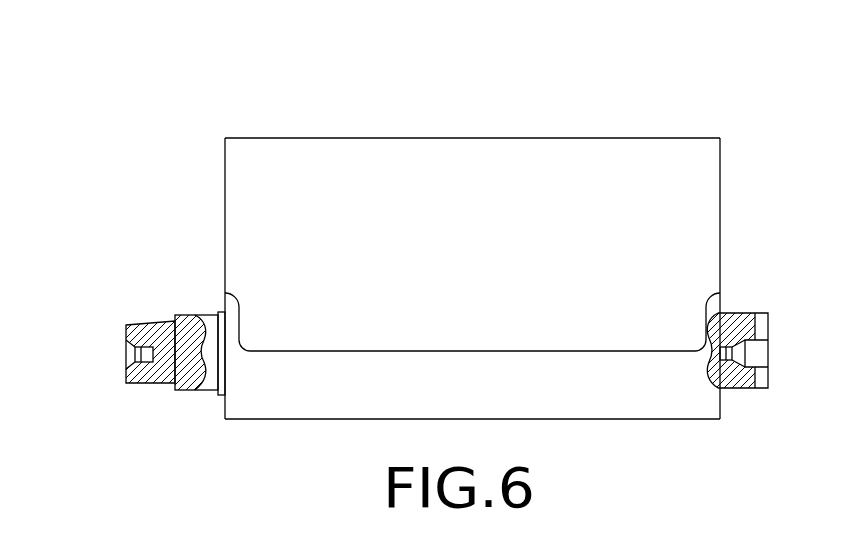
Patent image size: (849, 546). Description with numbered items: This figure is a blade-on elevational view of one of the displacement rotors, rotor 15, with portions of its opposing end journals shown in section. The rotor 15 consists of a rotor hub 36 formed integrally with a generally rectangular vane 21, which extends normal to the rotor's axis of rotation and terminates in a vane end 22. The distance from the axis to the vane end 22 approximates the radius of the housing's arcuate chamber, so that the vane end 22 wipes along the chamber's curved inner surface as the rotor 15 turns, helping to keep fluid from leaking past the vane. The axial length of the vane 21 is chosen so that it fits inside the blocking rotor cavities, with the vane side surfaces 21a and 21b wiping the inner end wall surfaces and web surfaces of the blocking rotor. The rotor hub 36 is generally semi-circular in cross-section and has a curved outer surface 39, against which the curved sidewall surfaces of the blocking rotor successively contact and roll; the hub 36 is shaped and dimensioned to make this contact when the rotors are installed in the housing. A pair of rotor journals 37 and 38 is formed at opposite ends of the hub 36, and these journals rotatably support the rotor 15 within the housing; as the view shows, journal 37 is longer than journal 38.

The rotor 15 is at (478, 106).
The vane 21 is at (604, 173).
The vane side surface 21a is at (225, 152).
The vane side surface 21b is at (720, 173).
The vane end 22 is at (398, 138).
The rotor hub 36 is at (247, 408).
The rotor journal 37 is at (178, 392).
The rotor journal 38 is at (756, 390).
The curved outer surface 39 is at (642, 420).